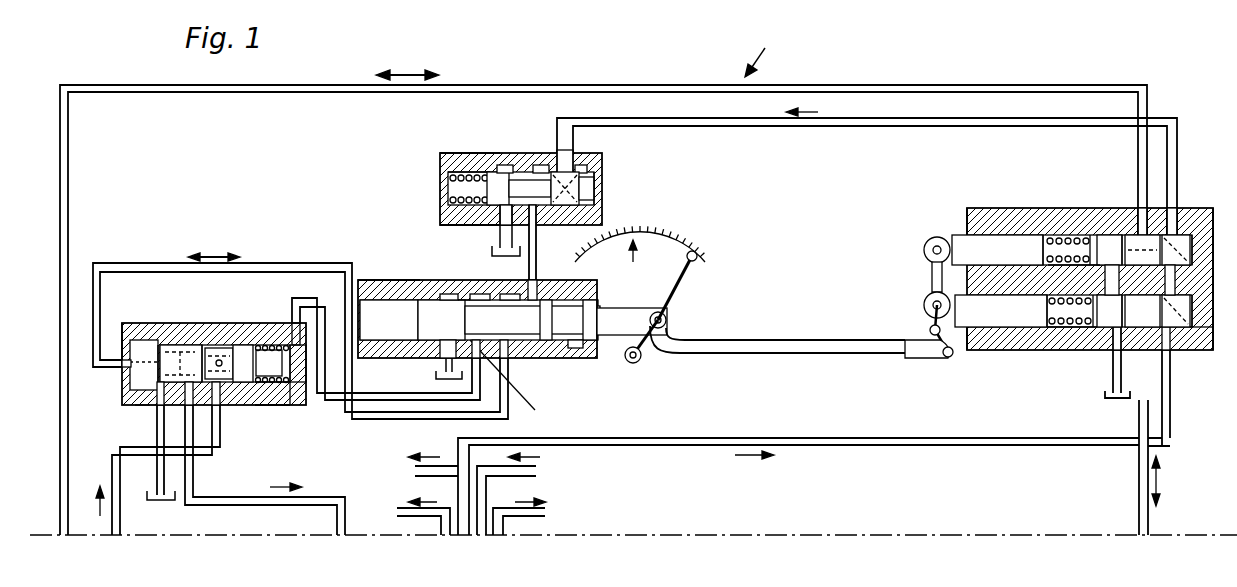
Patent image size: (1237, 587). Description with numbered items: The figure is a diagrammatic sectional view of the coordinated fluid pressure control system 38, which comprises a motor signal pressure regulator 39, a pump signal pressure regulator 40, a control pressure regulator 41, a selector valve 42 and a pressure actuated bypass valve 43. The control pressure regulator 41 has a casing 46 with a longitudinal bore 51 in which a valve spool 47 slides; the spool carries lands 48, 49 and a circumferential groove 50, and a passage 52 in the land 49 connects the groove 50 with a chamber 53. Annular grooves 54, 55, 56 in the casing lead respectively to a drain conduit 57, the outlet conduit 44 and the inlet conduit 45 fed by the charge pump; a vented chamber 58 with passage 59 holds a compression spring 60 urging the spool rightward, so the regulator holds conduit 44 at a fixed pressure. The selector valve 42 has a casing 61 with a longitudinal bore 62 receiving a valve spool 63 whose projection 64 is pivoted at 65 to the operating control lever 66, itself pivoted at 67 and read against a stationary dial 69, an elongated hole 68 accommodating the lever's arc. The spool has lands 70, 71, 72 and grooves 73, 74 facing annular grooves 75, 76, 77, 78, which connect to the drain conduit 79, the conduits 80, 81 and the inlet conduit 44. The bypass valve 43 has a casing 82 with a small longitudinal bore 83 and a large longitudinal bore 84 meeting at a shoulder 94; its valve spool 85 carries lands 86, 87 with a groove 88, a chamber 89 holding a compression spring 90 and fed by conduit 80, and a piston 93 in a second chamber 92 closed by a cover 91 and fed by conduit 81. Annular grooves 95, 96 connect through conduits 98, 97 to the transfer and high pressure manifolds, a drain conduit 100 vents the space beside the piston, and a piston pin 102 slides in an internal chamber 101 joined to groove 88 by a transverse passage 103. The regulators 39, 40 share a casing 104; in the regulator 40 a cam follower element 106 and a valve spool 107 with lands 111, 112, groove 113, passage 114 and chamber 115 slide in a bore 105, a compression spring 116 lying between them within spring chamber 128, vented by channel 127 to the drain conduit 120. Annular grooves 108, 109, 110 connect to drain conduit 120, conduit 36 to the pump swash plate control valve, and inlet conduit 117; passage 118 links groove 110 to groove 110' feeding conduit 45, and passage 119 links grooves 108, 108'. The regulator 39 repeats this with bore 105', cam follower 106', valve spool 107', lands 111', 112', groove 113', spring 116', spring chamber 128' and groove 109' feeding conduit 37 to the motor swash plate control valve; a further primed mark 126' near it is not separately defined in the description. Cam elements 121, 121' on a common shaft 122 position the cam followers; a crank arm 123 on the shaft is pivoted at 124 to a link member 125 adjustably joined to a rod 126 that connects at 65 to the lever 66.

The conduit 36 is at (1150, 524).
The conduit 37 is at (72, 184).
The coordinated fluid pressure control system 38 is at (766, 48).
The motor signal pressure regulator 39 is at (1196, 208).
The pump signal pressure regulator 40 is at (1178, 398).
The control pressure regulator 41 is at (603, 166).
The selector valve 42 is at (392, 280).
The pressure actuated bypass valve 43 is at (244, 323).
The conduit 44 is at (536, 242).
The conduit 45 is at (668, 118).
The casing 46 is at (455, 153).
The valve spool 47 is at (496, 172).
The land 48 is at (494, 245).
The land 49 is at (585, 166).
The circumferential groove 50 is at (530, 180).
The longitudinal bore 51 is at (600, 208).
The passage 52 is at (580, 176).
The chamber 53 is at (596, 188).
The annular groove 54 is at (505, 165).
The annular groove 55 is at (541, 165).
The annular groove 56 is at (566, 150).
The conduit 57 is at (465, 282).
The chamber 58 is at (450, 177).
The passage 59 is at (450, 200).
The compression spring 60 is at (442, 222).
The casing 61 is at (378, 280).
The longitudinal bore 62 is at (389, 320).
The valve spool 63 is at (504, 376).
The projection 64 is at (622, 322).
The pivotal connection 65 is at (666, 316).
The operating control lever 66 is at (697, 262).
The pivot 67 is at (636, 364).
The elongated hole 68 is at (672, 326).
The stationary dial 69 is at (633, 262).
The land 70 is at (452, 328).
The land 71 is at (546, 340).
The land 72 is at (598, 342).
The circumferential groove 73 is at (532, 320).
The circumferential groove 74 is at (578, 348).
The annular groove 75 is at (449, 294).
The annular groove 76 is at (480, 294).
The annular groove 77 is at (510, 294).
The annular groove 78 is at (538, 292).
The conduit 79 is at (438, 372).
The conduit 80 is at (298, 300).
The conduit 81 is at (146, 264).
The casing 82 is at (186, 345).
The small longitudinal bore 83 is at (296, 406).
The large longitudinal bore 84 is at (148, 406).
The valve spool 85 is at (200, 348).
The land 86 is at (160, 408).
The land 87 is at (270, 345).
The circumferential groove 88 is at (262, 385).
The chamber 89 is at (298, 385).
The compression spring 90 is at (280, 406).
The cover 91 is at (124, 340).
The second chamber 92 is at (124, 380).
The piston 93 is at (145, 340).
The shoulder 94 is at (160, 345).
The annular groove 95 is at (220, 348).
The annular groove 96 is at (242, 354).
The conduit 97 is at (108, 474).
The conduit 98 is at (192, 482).
The drain conduit 100 is at (152, 482).
The internal chamber 101 is at (190, 406).
The piston pin 102 is at (297, 300).
The transverse passage 103 is at (144, 364).
The common casing 104 is at (978, 208).
The longitudinal bore 105 is at (1200, 303).
The longitudinal bore 105' is at (1202, 257).
The cam follower element 106 is at (1001, 311).
The cam follower element 106' is at (997, 250).
The valve spool 107 is at (1096, 335).
The valve spool 107' is at (1098, 213).
The annular groove 108 is at (1091, 348).
The annular groove 108' is at (1116, 222).
The annular groove 109 is at (1131, 357).
The annular groove 109' is at (1163, 163).
The annular groove 110 is at (1163, 398).
The annular groove 110' is at (1169, 215).
The land 111 is at (1070, 335).
The land 111' is at (1077, 222).
The land 112 is at (1183, 332).
The land 112' is at (1176, 250).
The circumferential groove 113 is at (1142, 311).
The circumferential groove 113' is at (1191, 178).
The passage 114 is at (1210, 328).
The chamber 115 is at (1196, 350).
The compression spring 116 is at (1021, 335).
The compression spring 116' is at (1033, 222).
The inlet conduit 117 is at (915, 446).
The connecting passage 118 is at (1166, 280).
The connecting passage 119 is at (1105, 280).
The conduit 120 is at (1114, 396).
The cam element 121 is at (917, 298).
The cam element 121' is at (928, 223).
The common shaft 122 is at (932, 272).
The crank arm 123 is at (930, 328).
The pivotal connection 124 is at (946, 360).
The link member 125 is at (905, 354).
The rod 126 is at (810, 330).
The spring chamber 126' is at (1065, 275).
The longitudinal channel 127 is at (1070, 330).
The spring chamber 128 is at (1043, 315).
The spring chamber 128' is at (1059, 209).